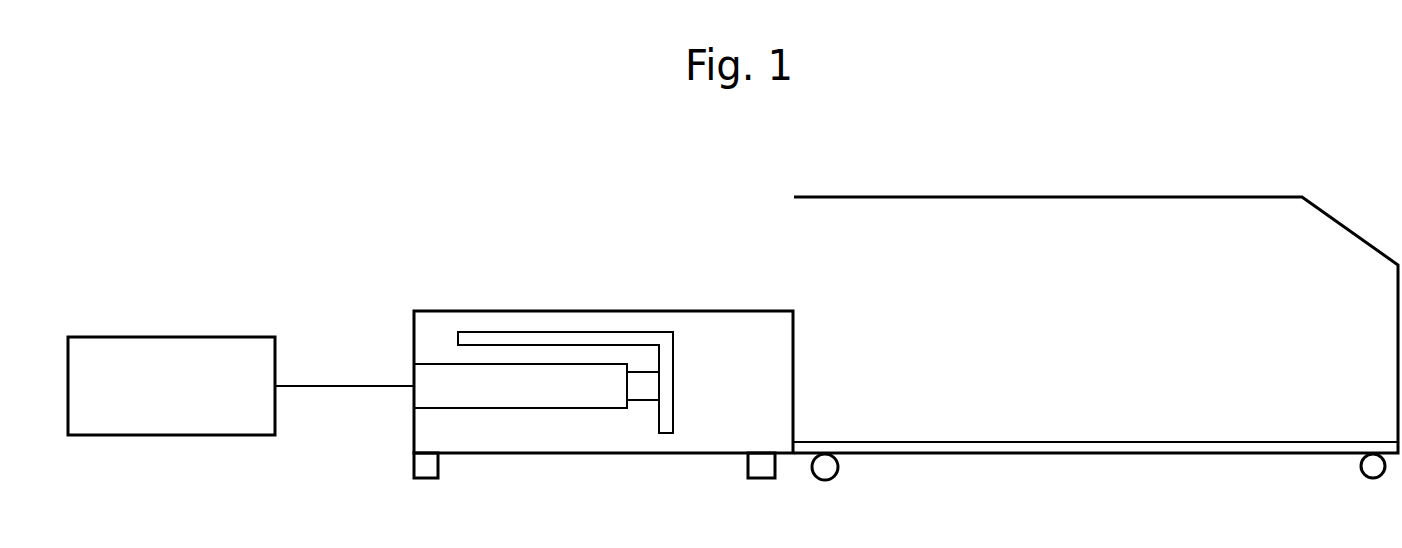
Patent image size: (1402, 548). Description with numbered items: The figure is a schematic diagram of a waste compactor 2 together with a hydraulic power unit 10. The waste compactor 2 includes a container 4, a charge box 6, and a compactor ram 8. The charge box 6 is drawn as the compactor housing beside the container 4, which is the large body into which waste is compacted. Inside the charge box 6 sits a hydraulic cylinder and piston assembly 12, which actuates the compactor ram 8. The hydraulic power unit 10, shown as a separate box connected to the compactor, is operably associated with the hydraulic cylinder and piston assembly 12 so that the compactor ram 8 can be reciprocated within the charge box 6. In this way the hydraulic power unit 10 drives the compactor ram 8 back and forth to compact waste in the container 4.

The waste compactor 2 is at (525, 196).
The container 4 is at (1088, 197).
The charge box 6 is at (738, 423).
The compactor ram 8 is at (673, 368).
The hydraulic power unit 10 is at (118, 337).
The hydraulic cylinder and piston assembly 12 is at (526, 408).